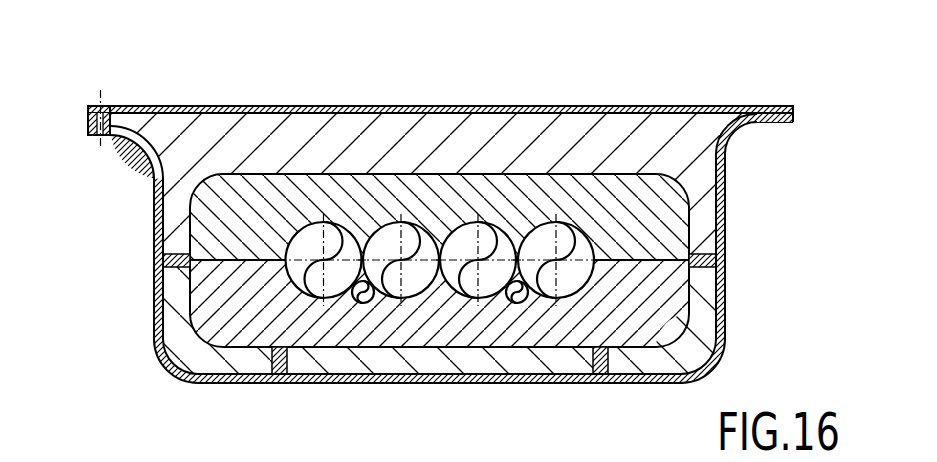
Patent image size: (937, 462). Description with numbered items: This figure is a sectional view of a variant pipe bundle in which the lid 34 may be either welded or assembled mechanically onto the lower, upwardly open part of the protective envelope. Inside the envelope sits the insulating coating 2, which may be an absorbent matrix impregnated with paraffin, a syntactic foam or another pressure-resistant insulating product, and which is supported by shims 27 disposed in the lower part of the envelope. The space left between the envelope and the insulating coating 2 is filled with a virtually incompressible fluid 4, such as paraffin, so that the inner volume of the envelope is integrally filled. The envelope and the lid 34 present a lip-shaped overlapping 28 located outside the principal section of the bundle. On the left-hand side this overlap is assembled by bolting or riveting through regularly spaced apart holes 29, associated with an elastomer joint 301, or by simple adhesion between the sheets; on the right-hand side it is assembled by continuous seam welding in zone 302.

The insulating coating 2 is at (667, 303).
The incompressible fluid 4 is at (697, 170).
The shims 27 is at (160, 281).
The lip-shaped overlapping 28 is at (780, 100).
The holes 29 is at (97, 96).
The elastomer joint 301 is at (82, 121).
The seam welding zone 302 is at (806, 116).
The lid 34 is at (584, 102).